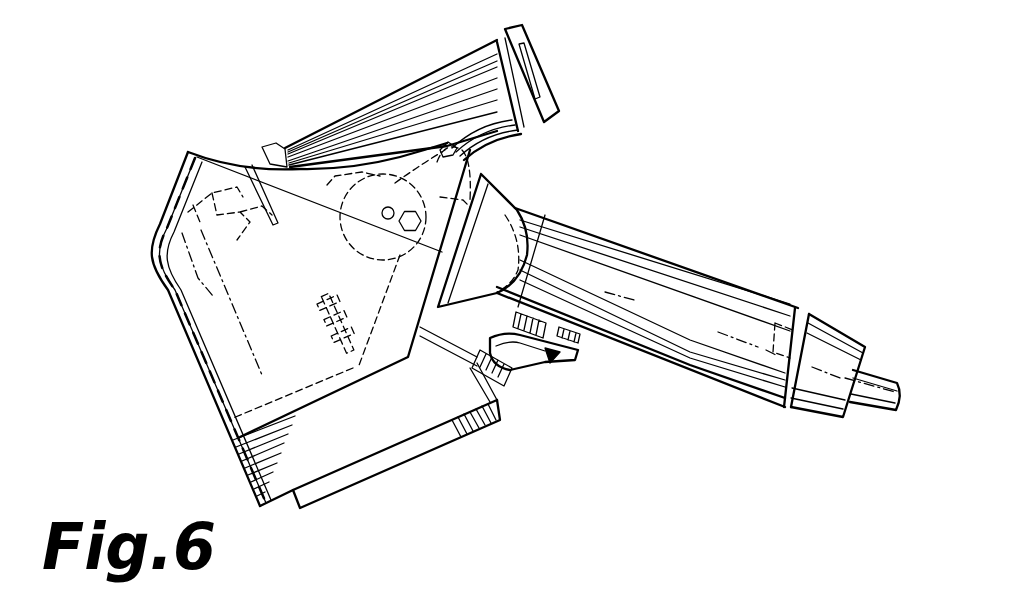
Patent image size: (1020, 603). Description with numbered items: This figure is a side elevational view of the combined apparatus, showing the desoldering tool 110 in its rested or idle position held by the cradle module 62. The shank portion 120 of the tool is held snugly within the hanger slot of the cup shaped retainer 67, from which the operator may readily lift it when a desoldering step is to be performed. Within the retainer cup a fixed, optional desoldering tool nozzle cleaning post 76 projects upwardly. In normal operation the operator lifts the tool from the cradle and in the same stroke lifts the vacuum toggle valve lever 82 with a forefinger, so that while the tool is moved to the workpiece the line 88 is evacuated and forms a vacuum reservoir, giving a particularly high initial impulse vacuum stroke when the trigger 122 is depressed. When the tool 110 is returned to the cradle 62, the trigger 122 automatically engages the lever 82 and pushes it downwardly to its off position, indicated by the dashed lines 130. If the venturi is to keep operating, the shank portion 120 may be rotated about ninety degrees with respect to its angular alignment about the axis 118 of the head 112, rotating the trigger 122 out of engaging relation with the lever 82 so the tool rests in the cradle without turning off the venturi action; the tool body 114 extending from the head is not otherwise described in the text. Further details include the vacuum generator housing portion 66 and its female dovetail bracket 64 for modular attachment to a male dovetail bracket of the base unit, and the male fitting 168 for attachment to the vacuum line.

The cradle module 62 is at (157, 214).
The female dovetail bracket 64 is at (377, 476).
The vacuum generator housing portion 66 is at (240, 467).
The cup shaped retainer 67 is at (217, 157).
The desoldering tool nozzle cleaning post 76 is at (325, 333).
The vacuum toggle valve lever 82 is at (545, 375).
The line 88 is at (877, 410).
The desoldering tool 110 is at (636, 196).
The head 112 is at (450, 66).
The barrel 114 is at (737, 288).
The axis 118 is at (802, 306).
The shank portion 120 is at (432, 268).
The trigger 122 is at (578, 352).
The dashed lines 130 is at (573, 370).
The male fitting 168 is at (463, 163).